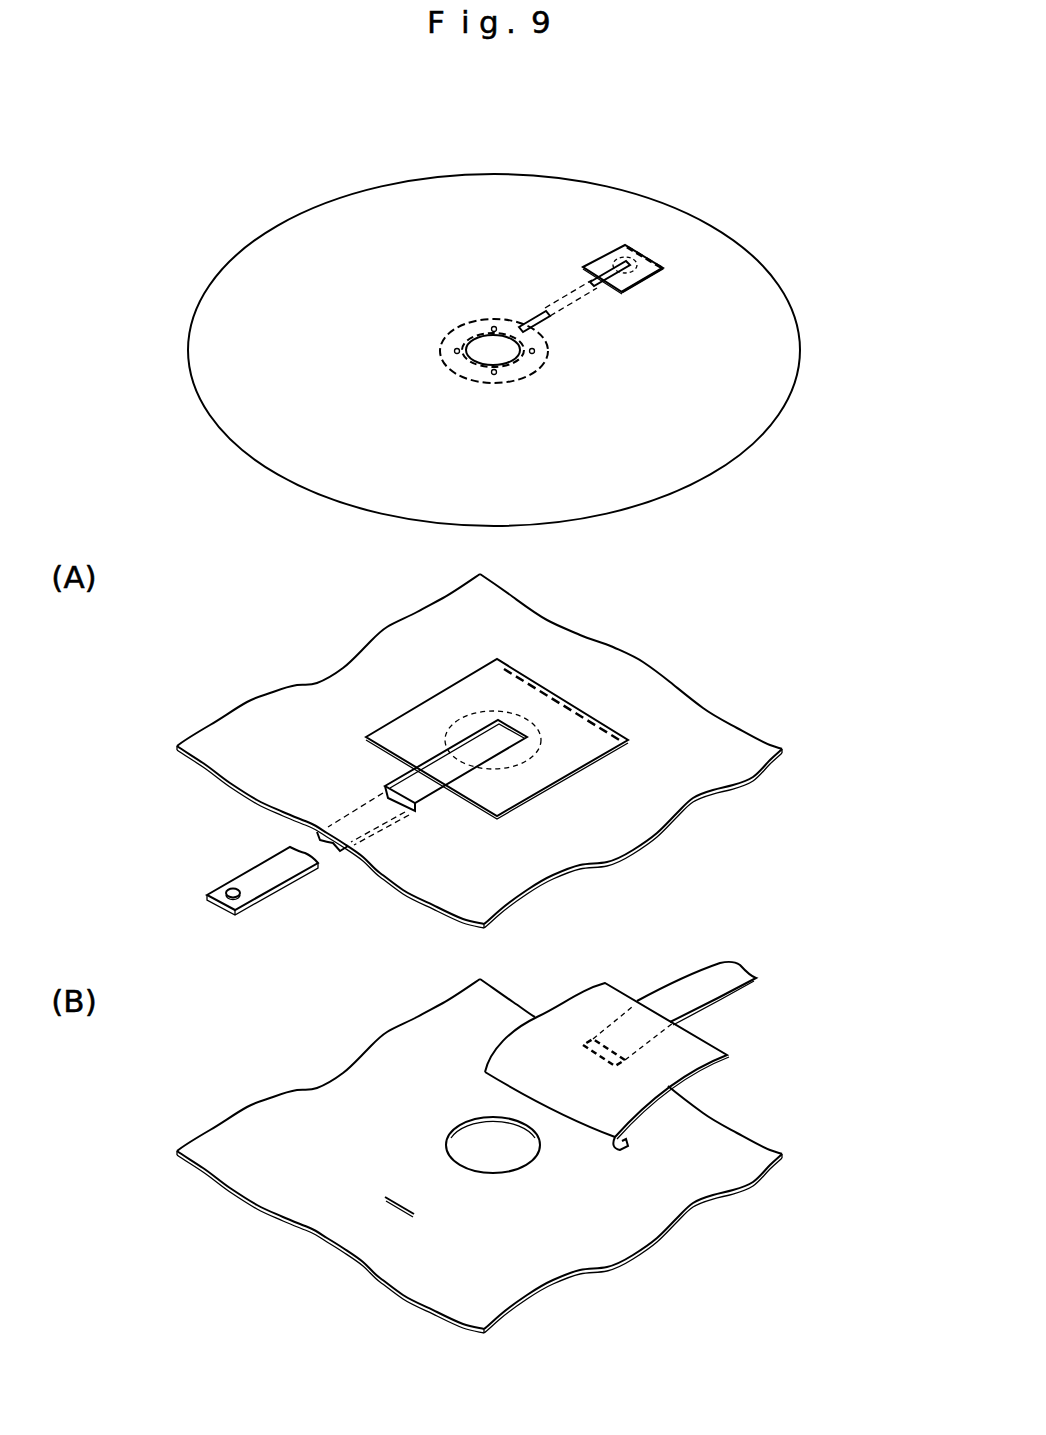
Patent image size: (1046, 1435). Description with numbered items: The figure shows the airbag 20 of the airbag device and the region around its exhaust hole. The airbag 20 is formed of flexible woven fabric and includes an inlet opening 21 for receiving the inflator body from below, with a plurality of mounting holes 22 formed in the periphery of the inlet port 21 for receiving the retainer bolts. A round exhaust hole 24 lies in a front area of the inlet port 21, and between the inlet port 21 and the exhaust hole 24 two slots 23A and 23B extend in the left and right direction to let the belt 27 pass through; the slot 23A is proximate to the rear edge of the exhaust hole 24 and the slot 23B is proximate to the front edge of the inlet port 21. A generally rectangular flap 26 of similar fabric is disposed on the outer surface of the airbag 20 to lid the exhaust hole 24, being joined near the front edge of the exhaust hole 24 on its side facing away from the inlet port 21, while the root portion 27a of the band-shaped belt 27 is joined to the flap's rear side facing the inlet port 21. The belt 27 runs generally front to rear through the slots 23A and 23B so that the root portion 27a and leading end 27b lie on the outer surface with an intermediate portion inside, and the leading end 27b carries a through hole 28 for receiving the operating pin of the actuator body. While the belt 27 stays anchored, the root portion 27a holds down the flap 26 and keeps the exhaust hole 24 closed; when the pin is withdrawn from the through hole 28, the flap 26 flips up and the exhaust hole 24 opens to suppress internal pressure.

The airbag 20 is at (748, 234).
The inlet opening 21 is at (480, 340).
The mounting holes 22 is at (528, 356).
The slot 23A is at (594, 292).
The slot 23B is at (552, 312).
The exhaust hole 24 is at (636, 258).
The flap 26 is at (624, 247).
The belt 27 is at (600, 258).
The root portion of the belt 27a is at (634, 286).
The leading end of the belt 27b is at (524, 328).
The through hole 28 is at (507, 335).